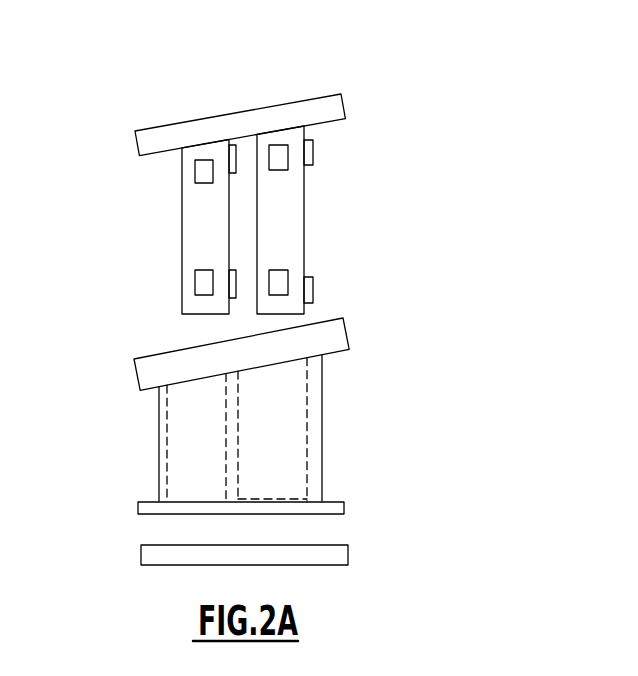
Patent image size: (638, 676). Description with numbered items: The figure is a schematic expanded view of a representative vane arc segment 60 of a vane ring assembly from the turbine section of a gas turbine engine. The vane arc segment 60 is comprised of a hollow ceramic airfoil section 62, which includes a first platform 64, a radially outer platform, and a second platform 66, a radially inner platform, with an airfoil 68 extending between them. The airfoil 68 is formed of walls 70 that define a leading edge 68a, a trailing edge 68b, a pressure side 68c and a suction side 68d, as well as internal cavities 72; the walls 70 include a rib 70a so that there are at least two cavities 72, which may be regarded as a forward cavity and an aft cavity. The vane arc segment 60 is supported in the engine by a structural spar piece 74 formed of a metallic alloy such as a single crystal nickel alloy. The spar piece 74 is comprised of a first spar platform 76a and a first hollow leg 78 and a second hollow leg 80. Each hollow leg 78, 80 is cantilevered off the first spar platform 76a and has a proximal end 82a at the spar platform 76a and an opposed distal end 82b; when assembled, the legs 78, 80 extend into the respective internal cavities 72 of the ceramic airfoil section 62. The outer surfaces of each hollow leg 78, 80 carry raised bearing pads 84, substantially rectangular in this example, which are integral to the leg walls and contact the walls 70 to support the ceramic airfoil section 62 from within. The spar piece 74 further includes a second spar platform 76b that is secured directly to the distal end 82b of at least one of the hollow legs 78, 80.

The vane arc segment 60 is at (428, 83).
The hollow ceramic airfoil section 62 is at (90, 348).
The first platform 64 is at (346, 336).
The second platform 66 is at (344, 508).
The airfoil 68 is at (315, 372).
The leading edge 68a is at (160, 431).
The trailing edge 68b is at (322, 439).
The pressure side 68c is at (314, 478).
The suction side 68d is at (328, 403).
The walls 70 is at (158, 490).
The rib 70a is at (230, 400).
The internal cavity 72 is at (238, 458).
The spar piece 74 is at (138, 186).
The first spar platform 76a is at (330, 108).
The second spar platform 76b is at (348, 556).
The first hollow leg 78 is at (197, 232).
The second hollow leg 80 is at (290, 226).
The proximal end 82a is at (172, 160).
The distal end 82b is at (238, 317).
The raised bearing pads 84 is at (234, 174).